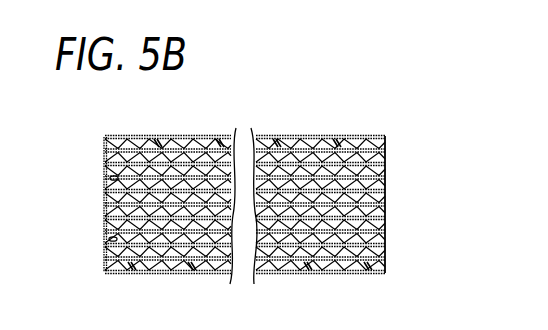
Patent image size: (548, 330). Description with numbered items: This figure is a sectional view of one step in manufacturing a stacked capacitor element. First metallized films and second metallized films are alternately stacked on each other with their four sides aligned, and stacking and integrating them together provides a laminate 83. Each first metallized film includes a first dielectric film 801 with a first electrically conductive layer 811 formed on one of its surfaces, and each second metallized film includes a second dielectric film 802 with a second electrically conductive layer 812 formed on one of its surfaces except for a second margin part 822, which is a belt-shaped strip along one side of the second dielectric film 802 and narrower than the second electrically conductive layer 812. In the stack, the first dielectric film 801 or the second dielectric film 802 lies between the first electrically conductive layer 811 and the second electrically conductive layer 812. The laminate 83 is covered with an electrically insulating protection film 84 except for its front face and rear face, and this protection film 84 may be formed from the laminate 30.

The protection film 84 is at (242, 203).
The laminate 30 is at (242, 203).
The second margin part 822 is at (105, 177).
The second dielectric film 802 is at (115, 189).
The laminate 83 is at (105, 237).
The second electrically conductive layer 812 is at (377, 181).
The first electrically conductive layer 811 is at (184, 263).
The first dielectric film 801 is at (335, 263).